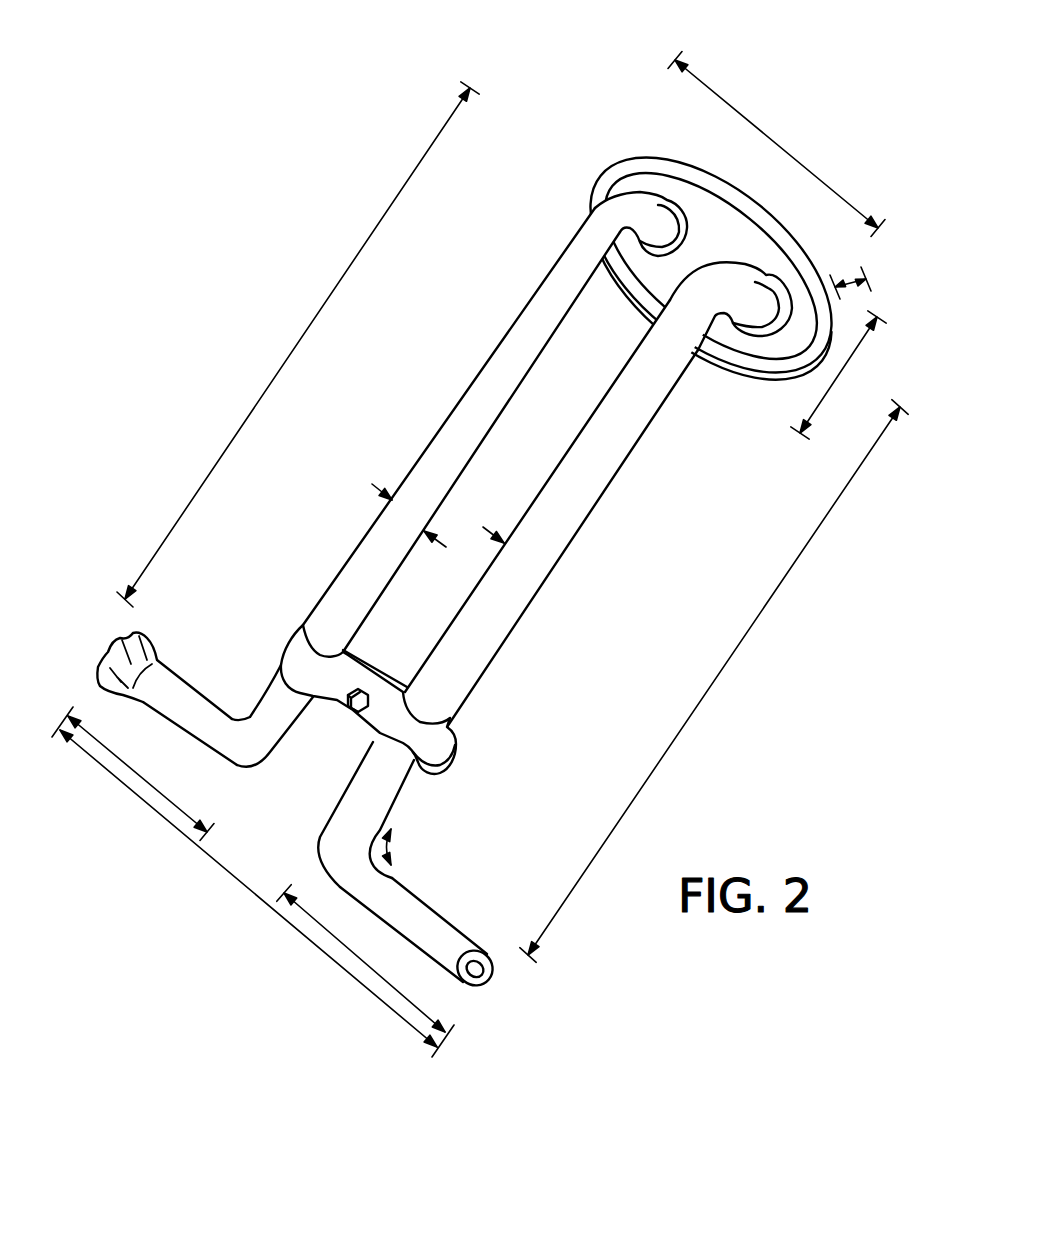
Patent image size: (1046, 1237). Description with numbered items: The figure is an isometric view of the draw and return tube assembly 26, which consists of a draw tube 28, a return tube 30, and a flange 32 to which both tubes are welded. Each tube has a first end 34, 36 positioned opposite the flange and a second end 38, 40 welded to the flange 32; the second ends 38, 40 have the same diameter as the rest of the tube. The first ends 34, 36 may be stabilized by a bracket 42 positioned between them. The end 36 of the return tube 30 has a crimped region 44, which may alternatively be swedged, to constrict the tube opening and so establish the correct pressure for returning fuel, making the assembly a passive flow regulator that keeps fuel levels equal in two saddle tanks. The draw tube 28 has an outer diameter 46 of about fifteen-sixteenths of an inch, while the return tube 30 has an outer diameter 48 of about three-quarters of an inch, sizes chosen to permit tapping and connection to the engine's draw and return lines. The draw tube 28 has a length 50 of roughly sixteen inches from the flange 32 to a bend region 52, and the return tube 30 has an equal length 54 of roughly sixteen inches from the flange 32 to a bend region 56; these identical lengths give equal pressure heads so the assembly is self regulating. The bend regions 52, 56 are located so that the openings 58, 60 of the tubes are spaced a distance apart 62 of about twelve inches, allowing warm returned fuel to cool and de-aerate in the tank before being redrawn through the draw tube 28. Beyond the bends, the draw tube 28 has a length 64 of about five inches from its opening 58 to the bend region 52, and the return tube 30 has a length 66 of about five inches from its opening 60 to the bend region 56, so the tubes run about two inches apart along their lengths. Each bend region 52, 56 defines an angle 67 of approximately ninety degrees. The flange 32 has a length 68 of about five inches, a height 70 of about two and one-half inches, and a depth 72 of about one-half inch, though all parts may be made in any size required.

The draw and return tube assembly 26 is at (491, 555).
The draw tube 28 is at (581, 491).
The return tube 30 is at (479, 375).
The flange 32 is at (727, 233).
The first end of draw tube 34 is at (402, 895).
The first end of return tube 36 is at (197, 722).
The second end of draw tube 38 is at (672, 358).
The second end of return tube 40 is at (554, 266).
The bracket 42 is at (420, 750).
The crimped region 44 is at (152, 641).
The outer diameter of draw tube 46 is at (549, 580).
The outer diameter of return tube 48 is at (380, 483).
The length of draw tube 50 is at (706, 689).
The bend region of draw tube 52 is at (328, 845).
The length of return tube 54 is at (342, 282).
The bend region of return tube 56 is at (253, 748).
The opening of draw tube 58 is at (494, 970).
The opening of return tube 60 is at (98, 648).
The distance apart 62 is at (253, 891).
The length of draw tube from opening to bend region 64 is at (373, 971).
The length of return tube from opening to bend region 66 is at (140, 777).
The angle 67 is at (385, 847).
The length of flange 68 is at (781, 147).
The height of flange 70 is at (823, 362).
The depth of flange 72 is at (850, 280).